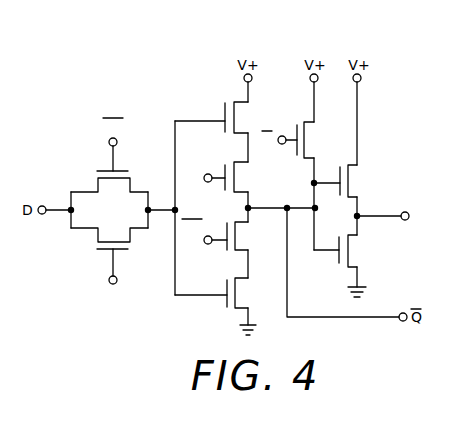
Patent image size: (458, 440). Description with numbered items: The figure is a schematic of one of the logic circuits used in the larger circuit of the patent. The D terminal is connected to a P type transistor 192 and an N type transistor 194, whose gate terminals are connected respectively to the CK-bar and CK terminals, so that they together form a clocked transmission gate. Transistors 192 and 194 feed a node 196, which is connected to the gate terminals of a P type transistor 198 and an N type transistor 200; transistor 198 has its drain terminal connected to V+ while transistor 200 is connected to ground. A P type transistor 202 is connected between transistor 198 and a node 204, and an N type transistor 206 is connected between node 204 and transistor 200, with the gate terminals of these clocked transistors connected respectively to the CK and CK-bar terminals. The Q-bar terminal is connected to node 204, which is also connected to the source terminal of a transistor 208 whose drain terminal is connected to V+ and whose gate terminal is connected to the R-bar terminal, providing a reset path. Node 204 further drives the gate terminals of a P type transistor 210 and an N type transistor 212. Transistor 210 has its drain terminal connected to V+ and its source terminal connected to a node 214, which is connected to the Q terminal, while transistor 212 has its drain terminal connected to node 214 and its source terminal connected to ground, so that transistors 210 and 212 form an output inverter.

The P type transistor 192 is at (134, 172).
The N type transistor 194 is at (97, 246).
The node 196 is at (180, 198).
The P type transistor 198 is at (254, 115).
The N type transistor 200 is at (256, 298).
The P type transistor 202 is at (246, 185).
The node 204 is at (277, 205).
The N type transistor 206 is at (254, 234).
The transistor 208 is at (321, 138).
The P type transistor 210 is at (366, 187).
The N type transistor 212 is at (364, 258).
The node 214 is at (362, 212).